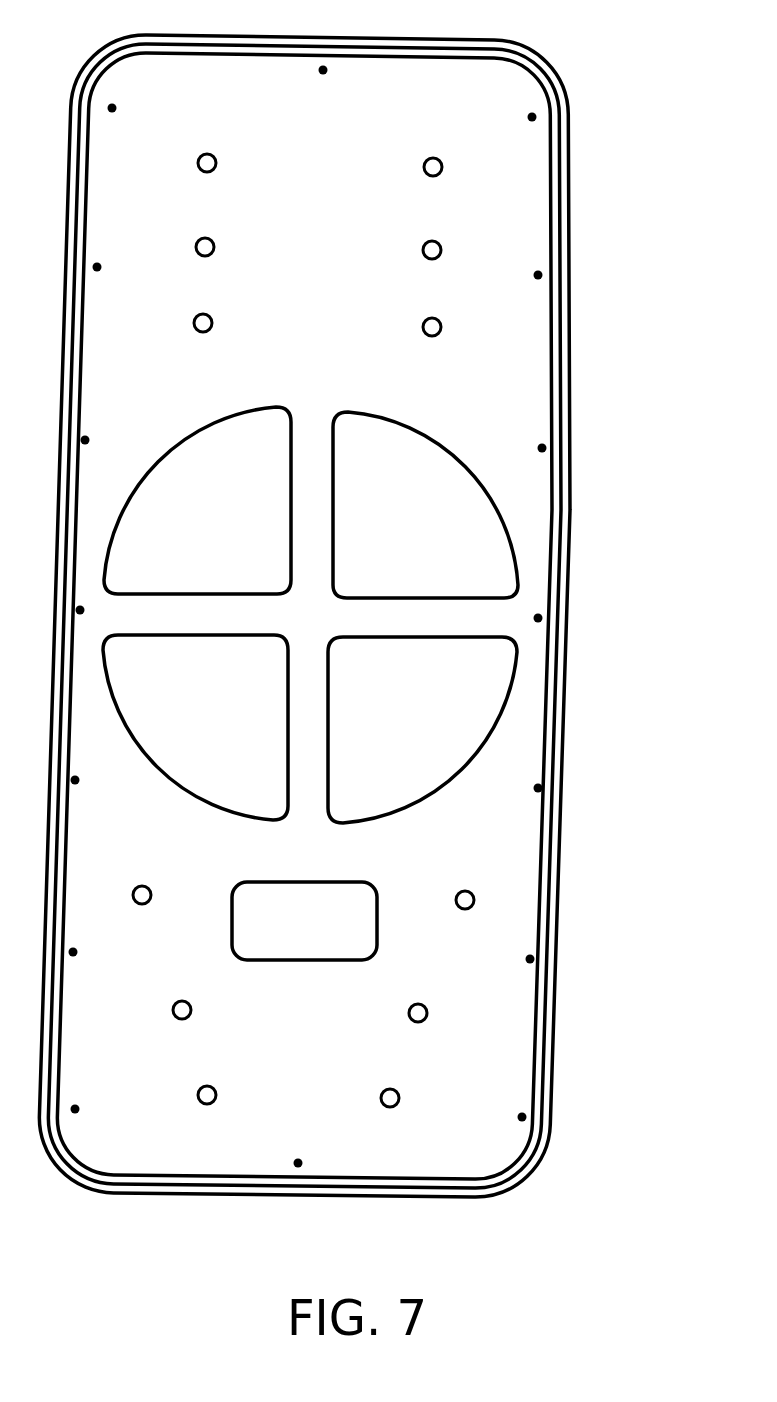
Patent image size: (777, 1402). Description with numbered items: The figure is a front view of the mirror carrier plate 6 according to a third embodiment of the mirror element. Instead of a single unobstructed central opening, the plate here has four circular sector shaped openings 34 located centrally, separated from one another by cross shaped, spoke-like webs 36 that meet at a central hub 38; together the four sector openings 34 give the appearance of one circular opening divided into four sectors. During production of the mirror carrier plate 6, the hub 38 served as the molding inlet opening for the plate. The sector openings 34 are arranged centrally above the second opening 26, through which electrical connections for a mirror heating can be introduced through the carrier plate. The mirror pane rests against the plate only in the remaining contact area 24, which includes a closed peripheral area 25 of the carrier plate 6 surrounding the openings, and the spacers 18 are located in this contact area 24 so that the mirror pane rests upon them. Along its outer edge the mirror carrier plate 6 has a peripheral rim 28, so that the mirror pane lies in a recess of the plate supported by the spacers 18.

The mirror carrier plate 6 is at (578, 74).
The spacers 18 is at (217, 167).
The contact area 24 is at (498, 402).
The peripheral area 25 is at (137, 423).
The second opening 26 is at (285, 942).
The peripheral rim 28 is at (557, 1047).
The circular sector shaped openings 34 is at (203, 535).
The spoke-like webs 36 is at (315, 428).
The central hub 38 is at (315, 615).